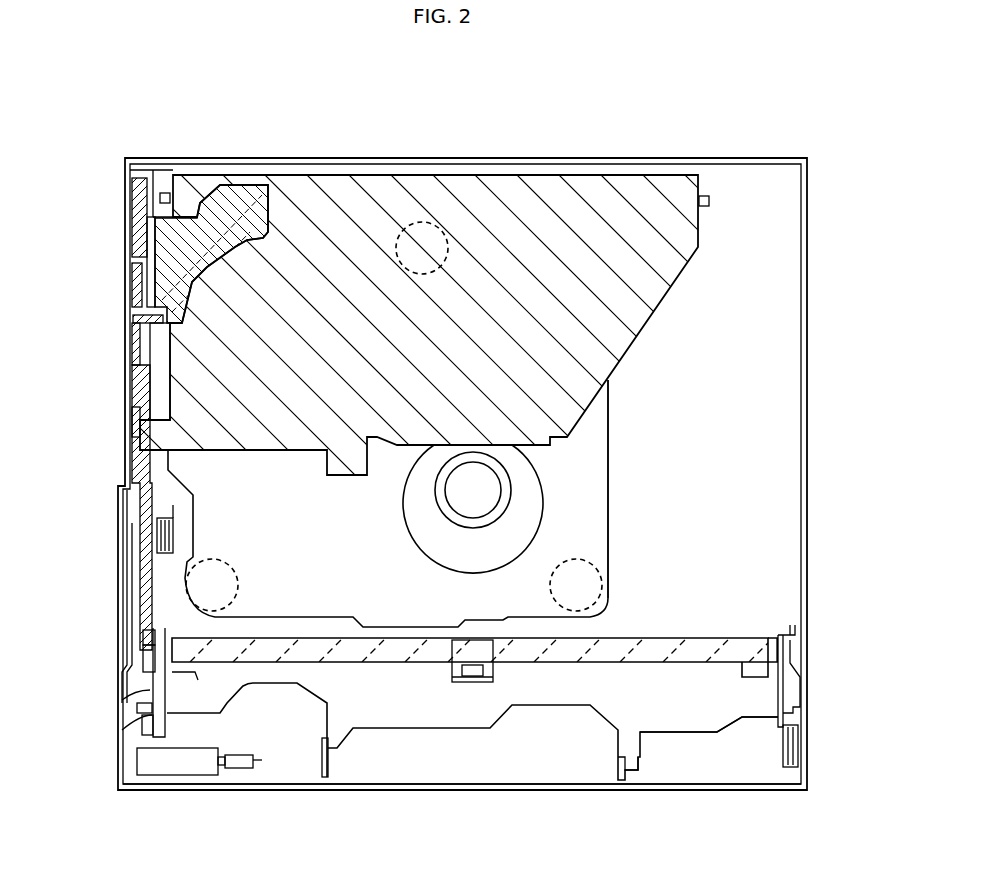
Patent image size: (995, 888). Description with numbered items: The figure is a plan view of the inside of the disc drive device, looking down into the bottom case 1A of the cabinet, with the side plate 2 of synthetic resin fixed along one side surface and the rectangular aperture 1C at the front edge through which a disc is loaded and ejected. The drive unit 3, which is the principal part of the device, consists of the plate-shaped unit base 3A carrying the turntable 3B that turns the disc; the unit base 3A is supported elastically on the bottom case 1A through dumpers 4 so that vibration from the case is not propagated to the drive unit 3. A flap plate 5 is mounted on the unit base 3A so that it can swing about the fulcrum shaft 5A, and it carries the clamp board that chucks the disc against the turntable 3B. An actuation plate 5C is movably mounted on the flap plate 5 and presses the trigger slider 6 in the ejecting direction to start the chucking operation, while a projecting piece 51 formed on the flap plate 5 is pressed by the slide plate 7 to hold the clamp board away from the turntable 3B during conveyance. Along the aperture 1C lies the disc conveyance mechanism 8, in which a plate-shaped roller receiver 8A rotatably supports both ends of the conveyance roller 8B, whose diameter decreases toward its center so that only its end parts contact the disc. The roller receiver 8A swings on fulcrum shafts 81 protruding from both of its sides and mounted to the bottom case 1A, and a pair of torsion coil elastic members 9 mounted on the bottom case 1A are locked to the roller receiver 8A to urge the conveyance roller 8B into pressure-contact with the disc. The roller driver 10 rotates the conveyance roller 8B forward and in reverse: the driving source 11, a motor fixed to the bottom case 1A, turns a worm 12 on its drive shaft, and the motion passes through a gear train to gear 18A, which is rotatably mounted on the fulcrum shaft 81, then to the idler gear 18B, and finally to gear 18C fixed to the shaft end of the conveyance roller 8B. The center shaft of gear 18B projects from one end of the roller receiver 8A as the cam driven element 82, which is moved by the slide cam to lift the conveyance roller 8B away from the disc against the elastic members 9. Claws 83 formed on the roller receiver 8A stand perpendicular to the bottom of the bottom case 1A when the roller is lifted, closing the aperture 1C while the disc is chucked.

The bottom case 1A is at (812, 267).
The aperture 1C is at (478, 795).
The side plate 2 is at (120, 565).
The drive unit 3 is at (662, 582).
The unit base 3A is at (585, 462).
The turntable 3B is at (420, 520).
The dumper 4 is at (418, 222).
The flap plate 5 is at (530, 218).
The fulcrum shaft 5A is at (160, 192).
The actuation plate 5C is at (240, 184).
The trigger slider 6 is at (133, 320).
The slide plate 7 is at (132, 378).
The disc conveyance mechanism 8 is at (522, 735).
The roller receiver 8A is at (708, 718).
The conveyance roller 8B is at (392, 662).
The elastic member 9 is at (158, 537).
The roller driver 10 is at (266, 770).
The driving source 11 is at (173, 772).
The worm 12 is at (236, 768).
The gear 18A is at (150, 732).
The gear 18B is at (148, 667).
The gear 18C is at (148, 640).
The projecting piece 51 is at (135, 432).
The fulcrum shaft 81 is at (150, 718).
The cam driven element 82 is at (140, 690).
The claw 83 is at (337, 780).